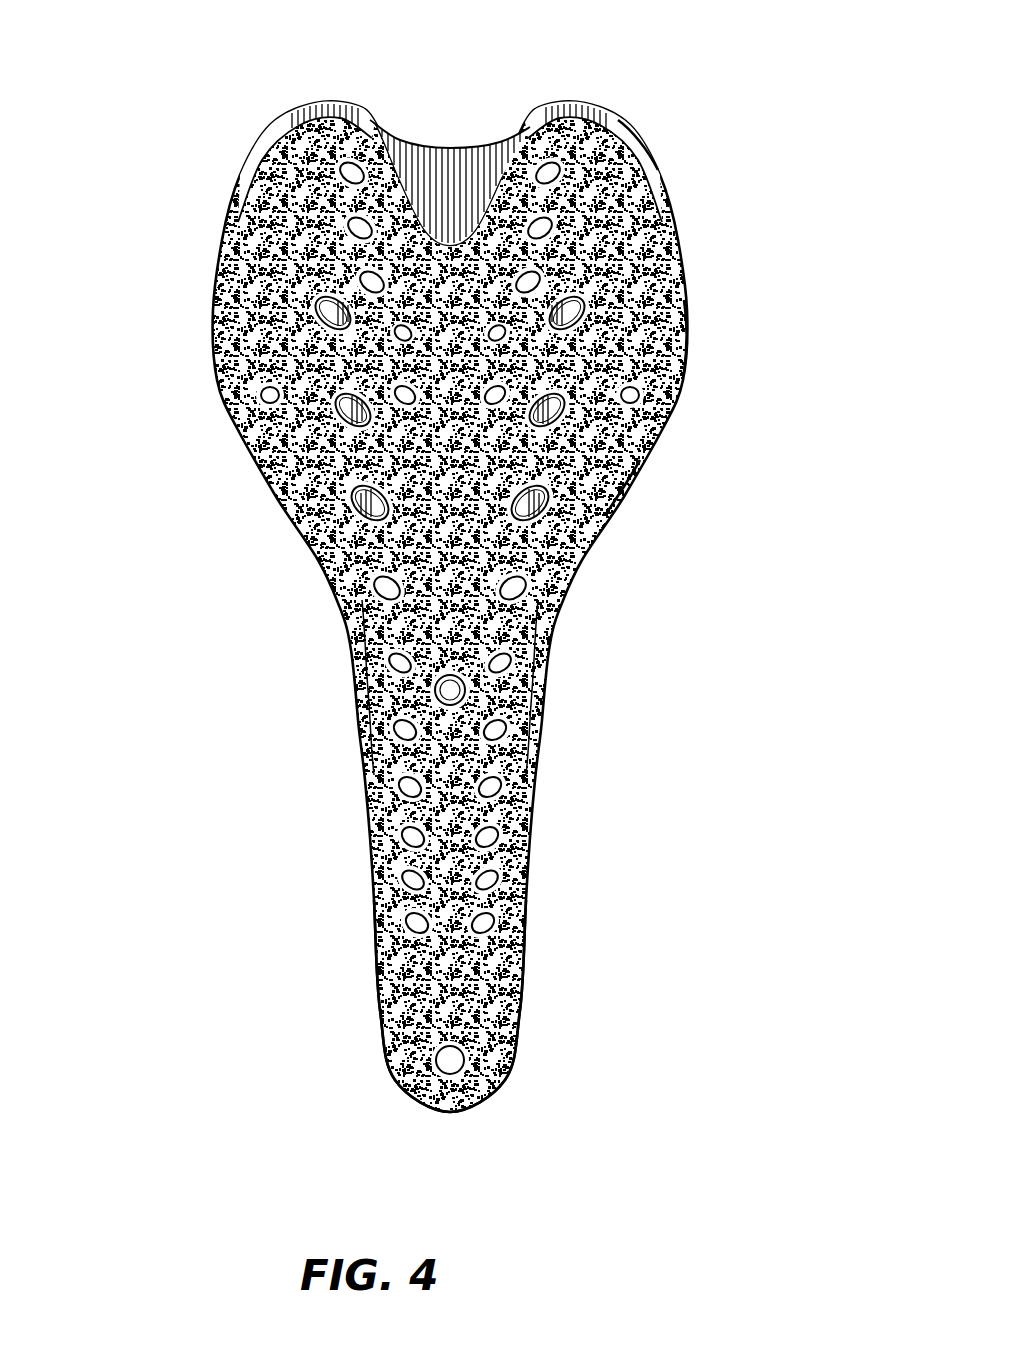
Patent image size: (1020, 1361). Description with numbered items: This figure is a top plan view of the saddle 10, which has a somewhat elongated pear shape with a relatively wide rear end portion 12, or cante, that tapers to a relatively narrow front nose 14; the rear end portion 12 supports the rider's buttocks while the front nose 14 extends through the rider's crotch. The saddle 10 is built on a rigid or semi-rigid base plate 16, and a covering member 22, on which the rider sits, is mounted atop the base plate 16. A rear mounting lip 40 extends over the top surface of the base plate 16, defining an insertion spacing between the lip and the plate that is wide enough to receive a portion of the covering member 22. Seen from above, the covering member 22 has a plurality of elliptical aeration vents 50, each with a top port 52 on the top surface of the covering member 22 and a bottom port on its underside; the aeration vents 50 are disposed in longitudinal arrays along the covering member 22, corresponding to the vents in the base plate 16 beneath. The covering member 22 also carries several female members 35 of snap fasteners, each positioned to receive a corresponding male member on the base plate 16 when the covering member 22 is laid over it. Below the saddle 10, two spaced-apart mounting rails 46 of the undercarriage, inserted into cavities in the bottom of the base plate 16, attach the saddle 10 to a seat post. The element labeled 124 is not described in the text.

The saddle 10 is at (142, 296).
The rear end portion 12 is at (640, 163).
The front nose 14 is at (483, 1018).
The base plate 16 is at (558, 118).
The covering member 22 is at (687, 335).
The female member 35 is at (246, 436).
The rear mounting lip 40 is at (482, 166).
The mounting rails 46 is at (351, 712).
The aeration vents 50 is at (364, 286).
The top port 52 is at (401, 326).
The tapered surface 124 is at (619, 492).